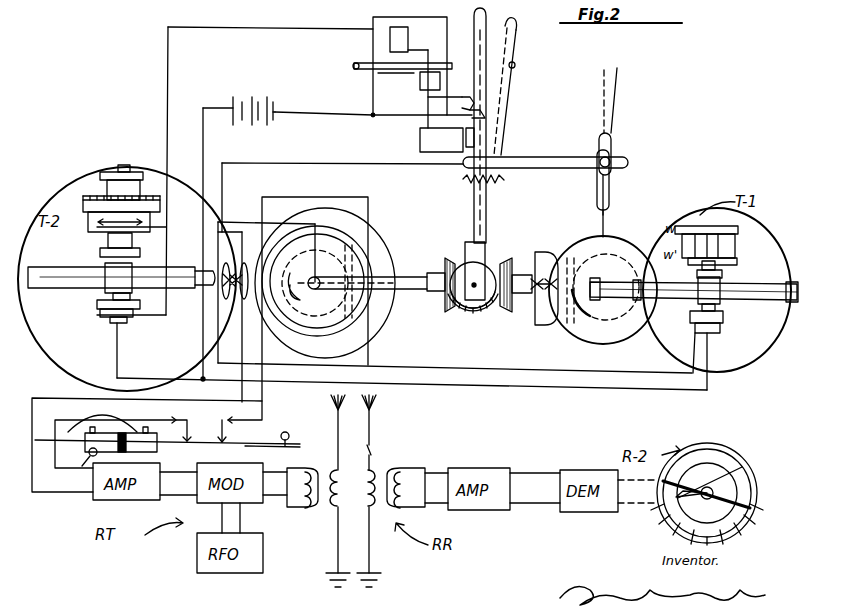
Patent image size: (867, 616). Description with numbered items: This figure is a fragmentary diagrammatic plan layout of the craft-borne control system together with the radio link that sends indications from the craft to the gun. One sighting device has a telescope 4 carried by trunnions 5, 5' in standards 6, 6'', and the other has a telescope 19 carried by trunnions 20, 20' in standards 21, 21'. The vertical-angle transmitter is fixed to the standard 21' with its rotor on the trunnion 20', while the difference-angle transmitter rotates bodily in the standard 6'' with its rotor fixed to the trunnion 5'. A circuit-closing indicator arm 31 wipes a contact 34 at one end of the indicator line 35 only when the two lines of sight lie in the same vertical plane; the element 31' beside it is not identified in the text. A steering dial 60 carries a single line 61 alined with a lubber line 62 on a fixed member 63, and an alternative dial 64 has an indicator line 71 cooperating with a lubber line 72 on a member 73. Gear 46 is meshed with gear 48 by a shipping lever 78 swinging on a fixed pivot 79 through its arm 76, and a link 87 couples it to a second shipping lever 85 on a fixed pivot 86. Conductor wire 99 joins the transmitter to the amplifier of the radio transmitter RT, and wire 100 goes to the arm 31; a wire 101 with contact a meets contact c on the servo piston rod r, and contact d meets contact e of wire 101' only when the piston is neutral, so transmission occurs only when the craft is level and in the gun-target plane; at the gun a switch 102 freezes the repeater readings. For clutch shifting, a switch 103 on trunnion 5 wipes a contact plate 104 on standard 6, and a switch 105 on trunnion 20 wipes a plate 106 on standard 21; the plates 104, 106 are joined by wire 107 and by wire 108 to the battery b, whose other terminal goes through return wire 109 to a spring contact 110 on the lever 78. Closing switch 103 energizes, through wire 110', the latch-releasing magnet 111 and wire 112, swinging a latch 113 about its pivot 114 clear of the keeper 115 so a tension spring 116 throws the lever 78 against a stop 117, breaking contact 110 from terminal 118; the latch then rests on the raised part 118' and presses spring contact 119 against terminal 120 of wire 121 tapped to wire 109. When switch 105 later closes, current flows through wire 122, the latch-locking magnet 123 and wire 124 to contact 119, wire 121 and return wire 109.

The telescope 4 is at (42, 268).
The trunnion 5 is at (99, 284).
The trunnion 5' is at (104, 247).
The standard 6 is at (207, 191).
The standard 6'' is at (109, 194).
The telescope 19 is at (684, 286).
The trunnion 20 is at (717, 290).
The trunnion 20' is at (732, 272).
The standard 21 is at (691, 315).
The standard 21' is at (723, 246).
The circuit-closing indicator arm 31 is at (371, 273).
The shaft coupling 31' is at (371, 268).
The contact 34 is at (384, 304).
The indicator line 35 is at (315, 283).
The gear 46 is at (445, 268).
The gear 48 is at (464, 309).
The steering dial 60 is at (603, 341).
The line 61 is at (603, 289).
The lubber line 62 is at (535, 318).
The member 63 is at (567, 250).
The steering dial 64 is at (358, 340).
The indicator line 71 is at (243, 299).
The lubber line 72 is at (222, 293).
The member 73 is at (233, 251).
The arm 76 is at (486, 252).
The shipping lever 78 is at (474, 25).
The fixed pivot 79 is at (486, 229).
The shipping lever 85 is at (612, 144).
The fixed pivot 86 is at (604, 236).
The link 87 is at (532, 158).
The conductor wire 99 is at (62, 395).
The wire 100 is at (235, 221).
The wire 101 is at (298, 300).
The wire 101' is at (166, 445).
The switch 102 is at (373, 450).
The switch 103 is at (97, 314).
The contact plate 104 is at (117, 325).
The switch 105 is at (720, 331).
The contact plate 106 is at (710, 337).
The wire 107 is at (445, 387).
The wire 108 is at (203, 130).
The wire 109 is at (284, 112).
The spring contact 110 is at (491, 93).
The wire 110' is at (235, 171).
The latch-releasing magnet 111 is at (390, 37).
The wire 112 is at (420, 81).
The latch 113 is at (378, 73).
The pivot 114 is at (354, 65).
The keeper 115 is at (428, 92).
The tension spring 116 is at (497, 175).
The stop 117 is at (516, 65).
The terminal 118 is at (512, 108).
The raised part 118' is at (498, 86).
The spring contact 119 is at (450, 63).
The terminal 120 is at (449, 44).
The wire 121 is at (373, 20).
The wire 122 is at (265, 165).
The latch-locking magnet 123 is at (420, 147).
The wire 124 is at (420, 130).